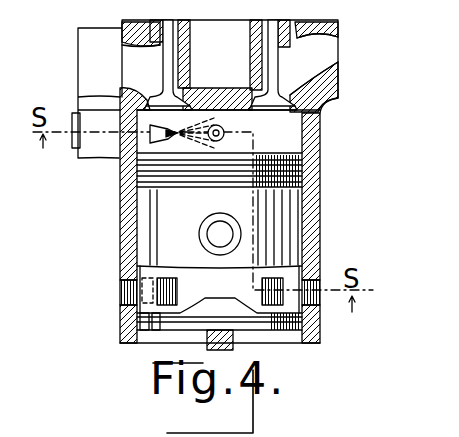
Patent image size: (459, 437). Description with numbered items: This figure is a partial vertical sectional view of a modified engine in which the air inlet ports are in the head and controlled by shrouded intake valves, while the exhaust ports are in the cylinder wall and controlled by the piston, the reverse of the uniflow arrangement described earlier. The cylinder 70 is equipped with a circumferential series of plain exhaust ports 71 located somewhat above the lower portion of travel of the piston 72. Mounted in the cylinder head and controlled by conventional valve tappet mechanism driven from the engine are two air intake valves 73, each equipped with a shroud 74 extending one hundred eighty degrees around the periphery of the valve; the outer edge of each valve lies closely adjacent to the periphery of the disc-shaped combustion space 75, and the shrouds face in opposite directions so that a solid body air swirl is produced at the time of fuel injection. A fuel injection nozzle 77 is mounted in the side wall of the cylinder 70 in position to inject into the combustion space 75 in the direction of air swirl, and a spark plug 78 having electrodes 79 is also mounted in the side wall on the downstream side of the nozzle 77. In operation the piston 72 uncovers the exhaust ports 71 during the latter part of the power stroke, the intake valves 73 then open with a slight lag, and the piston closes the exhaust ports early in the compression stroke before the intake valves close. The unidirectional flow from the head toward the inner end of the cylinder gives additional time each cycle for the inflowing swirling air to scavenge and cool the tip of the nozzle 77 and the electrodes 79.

The cylinder 70 is at (318, 166).
The exhaust ports 71 is at (128, 292).
The piston 72 is at (283, 218).
The air intake valves 73 is at (164, 60).
The shroud 74 is at (325, 82).
The combustion space 75 is at (285, 135).
The fuel injection nozzle 77 is at (150, 140).
The spark plug 78 is at (222, 125).
The electrodes 79 is at (221, 142).